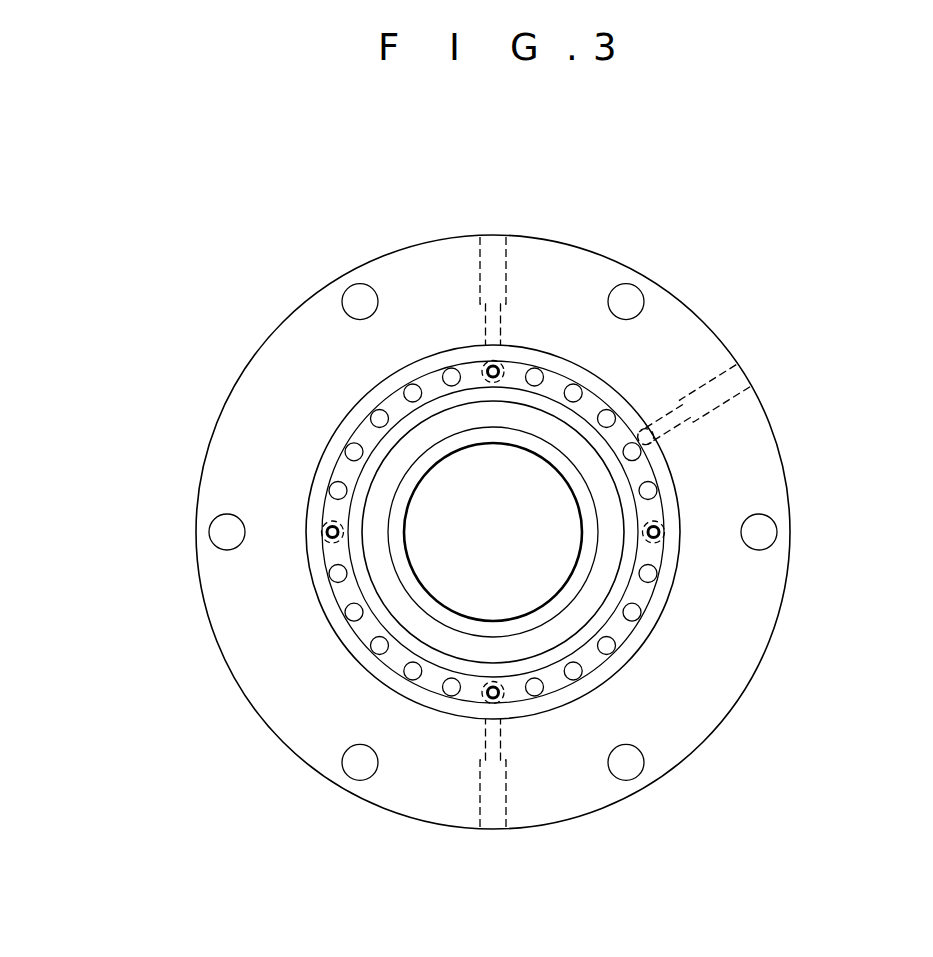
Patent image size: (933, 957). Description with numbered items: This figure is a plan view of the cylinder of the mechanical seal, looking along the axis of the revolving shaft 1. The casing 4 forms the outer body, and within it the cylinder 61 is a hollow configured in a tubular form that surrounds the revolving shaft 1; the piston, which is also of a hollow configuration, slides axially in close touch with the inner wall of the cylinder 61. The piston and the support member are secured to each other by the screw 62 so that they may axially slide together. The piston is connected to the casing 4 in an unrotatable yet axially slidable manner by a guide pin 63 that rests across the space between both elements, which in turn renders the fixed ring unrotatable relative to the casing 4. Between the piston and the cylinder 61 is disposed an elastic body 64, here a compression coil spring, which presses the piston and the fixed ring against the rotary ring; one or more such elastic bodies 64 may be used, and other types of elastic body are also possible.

The revolving shaft 1 is at (412, 573).
The casing 4 is at (198, 510).
The cylinder 61 is at (458, 352).
The screw 62 is at (327, 537).
The guide pin 63 is at (350, 450).
The elastic body 64 is at (373, 420).